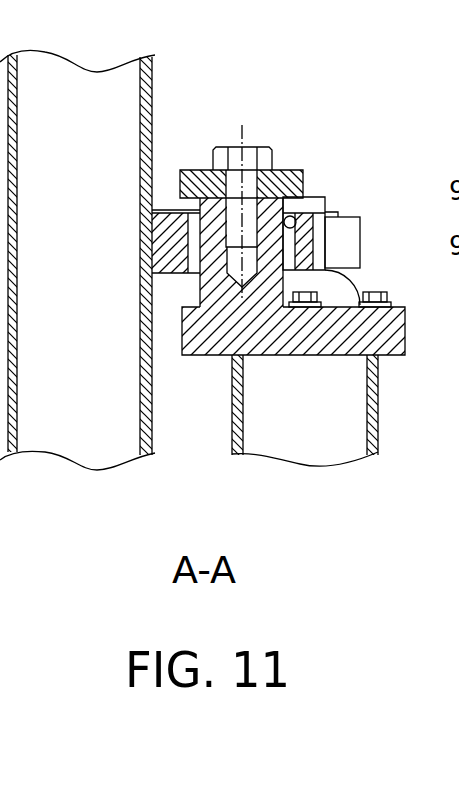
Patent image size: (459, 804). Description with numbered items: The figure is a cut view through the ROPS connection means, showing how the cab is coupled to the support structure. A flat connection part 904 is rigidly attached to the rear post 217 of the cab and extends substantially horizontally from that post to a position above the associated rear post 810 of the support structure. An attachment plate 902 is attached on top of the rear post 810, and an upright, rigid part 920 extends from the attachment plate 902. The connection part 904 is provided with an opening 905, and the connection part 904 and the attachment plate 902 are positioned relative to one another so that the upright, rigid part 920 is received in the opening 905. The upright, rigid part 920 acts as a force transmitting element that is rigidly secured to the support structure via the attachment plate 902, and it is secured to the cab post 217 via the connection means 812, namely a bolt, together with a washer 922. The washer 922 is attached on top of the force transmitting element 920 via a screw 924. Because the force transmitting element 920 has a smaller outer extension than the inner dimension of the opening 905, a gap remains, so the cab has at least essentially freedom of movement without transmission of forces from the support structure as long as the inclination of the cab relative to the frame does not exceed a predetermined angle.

The rear post 217 is at (17, 110).
The connection means 812 is at (258, 122).
The screw 924 is at (263, 153).
The washer 922 is at (286, 184).
The opening 905 is at (303, 197).
The connection part 904 is at (352, 238).
The upright, rigid part 920 is at (212, 282).
The attachment plate 902 is at (382, 337).
The rear post 810 is at (378, 425).